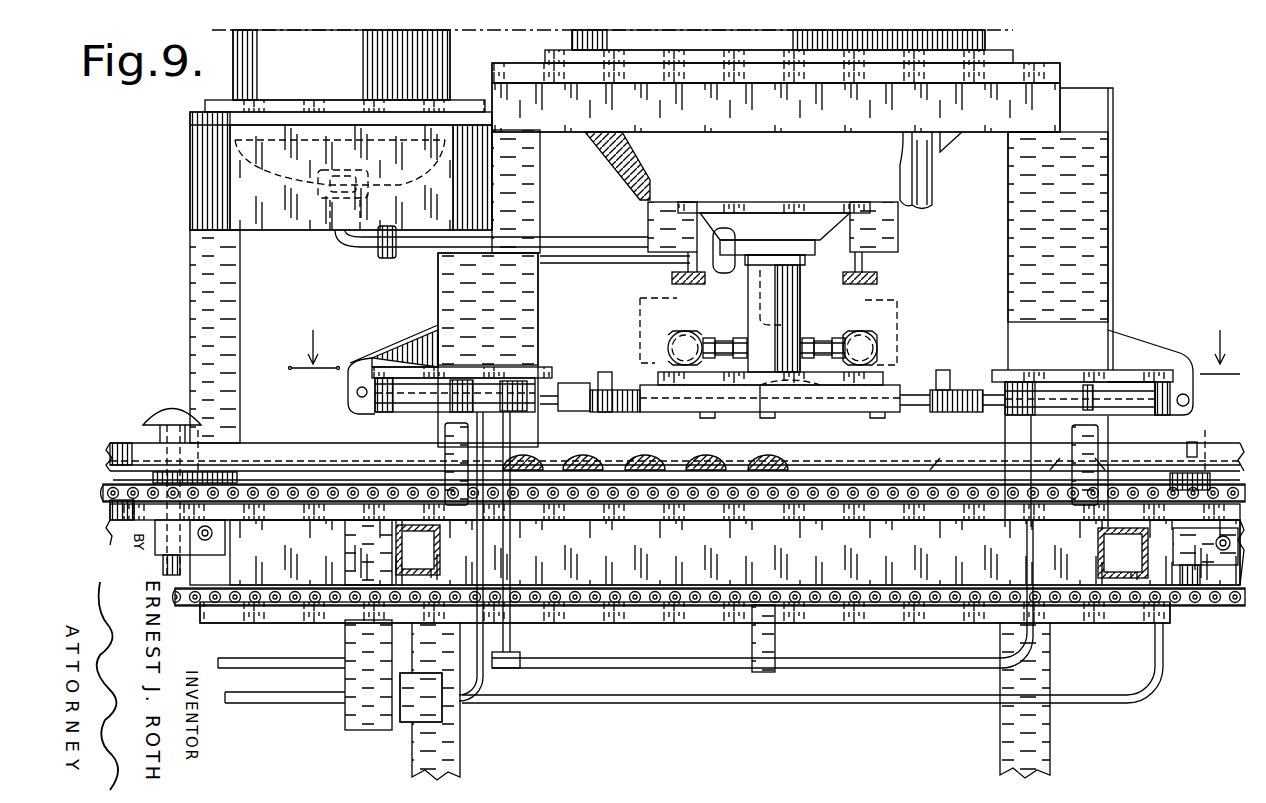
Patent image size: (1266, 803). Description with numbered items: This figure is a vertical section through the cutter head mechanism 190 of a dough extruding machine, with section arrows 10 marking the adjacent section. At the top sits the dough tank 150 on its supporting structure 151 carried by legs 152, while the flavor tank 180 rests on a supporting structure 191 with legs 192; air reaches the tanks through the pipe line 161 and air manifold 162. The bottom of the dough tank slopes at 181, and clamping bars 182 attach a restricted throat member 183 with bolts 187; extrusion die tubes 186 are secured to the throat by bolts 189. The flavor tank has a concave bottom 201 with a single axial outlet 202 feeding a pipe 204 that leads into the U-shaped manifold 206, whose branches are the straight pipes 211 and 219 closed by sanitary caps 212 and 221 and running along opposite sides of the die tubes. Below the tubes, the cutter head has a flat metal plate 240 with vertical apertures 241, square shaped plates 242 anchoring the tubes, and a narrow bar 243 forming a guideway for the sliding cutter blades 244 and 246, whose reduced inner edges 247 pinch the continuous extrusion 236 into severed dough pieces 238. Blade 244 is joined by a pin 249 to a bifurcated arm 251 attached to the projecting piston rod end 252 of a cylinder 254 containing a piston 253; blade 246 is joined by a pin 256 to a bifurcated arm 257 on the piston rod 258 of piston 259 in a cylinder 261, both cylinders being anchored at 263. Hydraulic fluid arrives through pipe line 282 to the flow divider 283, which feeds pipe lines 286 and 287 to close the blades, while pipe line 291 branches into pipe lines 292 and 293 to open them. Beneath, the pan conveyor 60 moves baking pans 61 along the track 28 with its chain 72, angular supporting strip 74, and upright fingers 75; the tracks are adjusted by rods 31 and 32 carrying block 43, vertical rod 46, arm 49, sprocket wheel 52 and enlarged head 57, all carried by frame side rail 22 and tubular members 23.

The section line 10 is at (768, 352).
The side rail 22 is at (950, 570).
The tubular member 23 is at (1100, 550).
The leg 28 is at (118, 443).
The transversely extending rod 31 is at (212, 535).
The transversely extending rod 32 is at (1218, 550).
The block 43 is at (212, 550).
The vertically extending threaded rod 46 is at (167, 560).
The inwardly extending arm 49 is at (205, 473).
The sprocket wheel 52 is at (719, 439).
The enlarged head 57 is at (172, 405).
The pan conveyor 60 is at (130, 510).
The baking pan 61 is at (940, 458).
The chain 72 is at (655, 503).
The angular supporting strip 74 is at (575, 623).
The upright finger 75 is at (445, 438).
The dough tank 150 is at (798, 50).
The supporting structure 151 is at (1030, 72).
The leg 152 is at (540, 188).
The pipe line 161 is at (932, 178).
The air manifold 162 is at (1033, 112).
The flavor tank 180 is at (358, 79).
The sloping bottom 181 is at (618, 160).
The clamping bar 182 is at (660, 230).
The throat member 183 is at (830, 212).
The extrusion die tube 186 is at (800, 272).
The bolt 187 is at (672, 278).
The bolt 189 is at (830, 250).
The cutter head mechanism 190 is at (895, 418).
The supporting structure 191 is at (190, 178).
The leg 192 is at (190, 300).
The concave bottom 201 is at (240, 148).
The axial outlet 202 is at (370, 182).
The pipe 204 is at (352, 242).
The U-shaped manifold 206 is at (731, 328).
The straight section of pipe 211 is at (660, 330).
The sanitary cap 212 is at (686, 330).
The straight pipe 219 is at (880, 338).
The sanitary cap 221 is at (877, 335).
The continuous extrusion 236 is at (740, 430).
The severed dough piece 238 is at (655, 460).
The flat metal plate 240 is at (665, 368).
The vertical aperture 241 is at (790, 388).
The square shaped plate 242 is at (822, 338).
The narrow bar 243 is at (615, 412).
The cutter blade 244 is at (770, 395).
The cutter blade 246 is at (947, 392).
The reduced inner edge 247 is at (805, 405).
The pin 249 is at (600, 380).
The bifurcated arm 251 is at (576, 412).
The piston rod end 252 is at (548, 398).
The piston 253 is at (462, 380).
The cylinder 254 is at (392, 378).
The pin 256 is at (1005, 380).
The bifurcated arm 257 is at (950, 372).
The piston rod 258 is at (1020, 390).
The piston 259 is at (1092, 392).
The cylinder 261 is at (1140, 395).
The anchor 263 is at (352, 370).
The pipe line 282 is at (250, 703).
The flow divider 283 is at (405, 722).
The pipe line 286 is at (484, 684).
The pipe line 287 is at (1163, 670).
The pipe line 291 is at (250, 658).
The pipe line 292 is at (511, 565).
The pipe line 293 is at (835, 660).